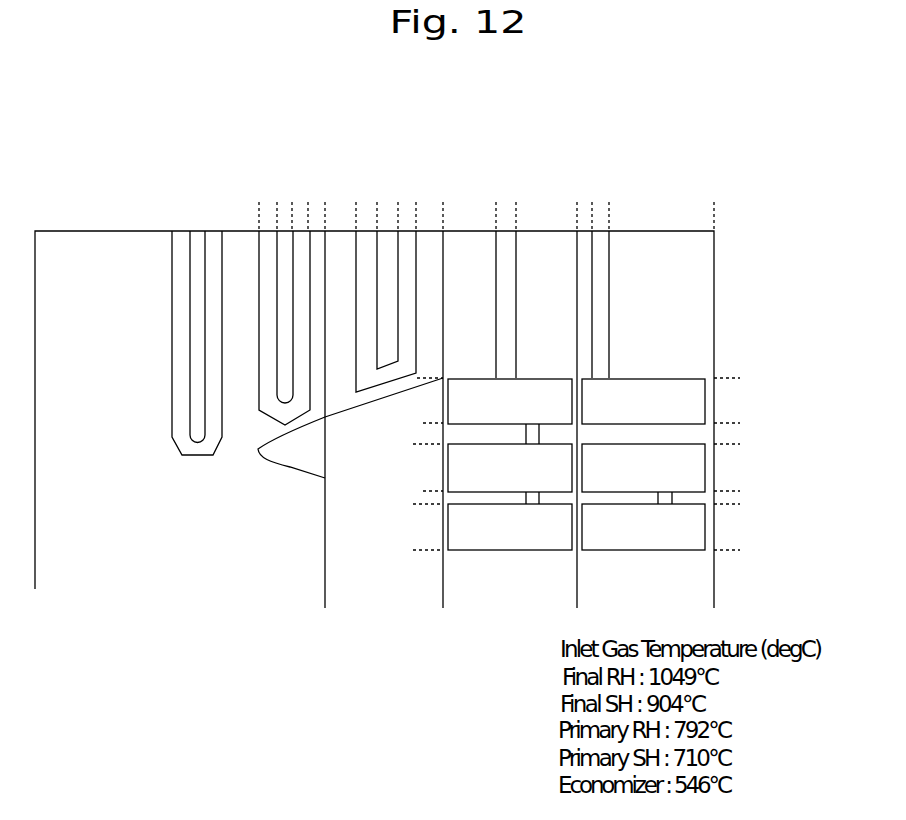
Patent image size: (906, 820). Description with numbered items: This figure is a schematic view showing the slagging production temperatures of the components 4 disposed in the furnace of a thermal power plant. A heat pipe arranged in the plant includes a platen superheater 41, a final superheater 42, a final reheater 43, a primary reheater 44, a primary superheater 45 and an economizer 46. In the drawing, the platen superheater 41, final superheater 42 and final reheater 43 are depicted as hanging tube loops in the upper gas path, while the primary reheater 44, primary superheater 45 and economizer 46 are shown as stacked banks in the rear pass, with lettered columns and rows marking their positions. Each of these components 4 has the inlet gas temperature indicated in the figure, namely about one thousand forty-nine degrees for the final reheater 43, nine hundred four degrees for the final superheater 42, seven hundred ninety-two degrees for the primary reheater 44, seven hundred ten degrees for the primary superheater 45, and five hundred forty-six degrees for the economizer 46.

The components 4 is at (715, 120).
The platen superheater 41 is at (195, 242).
The final superheater 42 is at (284, 244).
The final reheater 43 is at (387, 253).
The primary reheater 44 is at (540, 378).
The primary superheater 45 is at (685, 378).
The economizer 46 is at (698, 478).